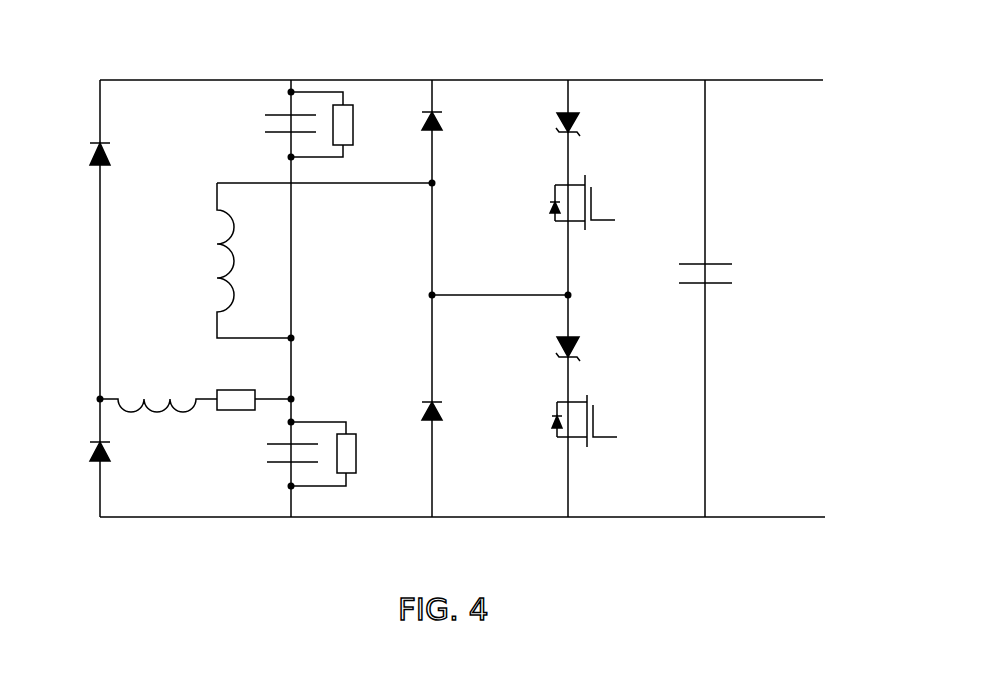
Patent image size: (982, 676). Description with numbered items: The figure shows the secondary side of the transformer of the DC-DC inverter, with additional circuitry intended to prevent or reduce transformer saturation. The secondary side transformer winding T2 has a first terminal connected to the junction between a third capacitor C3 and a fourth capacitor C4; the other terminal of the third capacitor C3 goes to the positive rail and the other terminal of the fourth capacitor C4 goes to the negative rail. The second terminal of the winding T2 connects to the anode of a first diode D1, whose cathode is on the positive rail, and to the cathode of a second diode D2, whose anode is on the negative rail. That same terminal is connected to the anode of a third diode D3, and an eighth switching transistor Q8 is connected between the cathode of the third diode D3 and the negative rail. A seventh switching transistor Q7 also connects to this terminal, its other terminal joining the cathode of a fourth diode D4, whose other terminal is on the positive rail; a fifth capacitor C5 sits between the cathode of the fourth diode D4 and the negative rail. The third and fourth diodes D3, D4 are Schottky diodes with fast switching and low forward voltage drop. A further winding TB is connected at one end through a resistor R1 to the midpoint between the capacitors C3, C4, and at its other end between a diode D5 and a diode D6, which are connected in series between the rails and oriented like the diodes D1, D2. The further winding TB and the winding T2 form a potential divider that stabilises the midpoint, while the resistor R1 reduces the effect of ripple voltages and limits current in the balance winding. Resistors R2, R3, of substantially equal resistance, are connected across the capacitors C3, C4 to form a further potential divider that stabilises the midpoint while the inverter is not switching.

The diode D6 is at (90, 155).
The diode D5 is at (90, 452).
The third capacitor C3 is at (263, 128).
The resistor R2 is at (354, 131).
The first diode D1 is at (445, 126).
The second diode D2 is at (445, 415).
The fourth diode D4 is at (579, 124).
The third diode D3 is at (580, 348).
The seventh switching transistor Q7 is at (598, 210).
The eighth switching transistor Q8 is at (600, 423).
The fifth capacitor C5 is at (736, 276).
The secondary side transformer winding T2 is at (215, 262).
The further winding TB is at (163, 403).
The resistor R1 is at (240, 390).
The fourth capacitor C4 is at (265, 457).
The resistor R3 is at (357, 466).